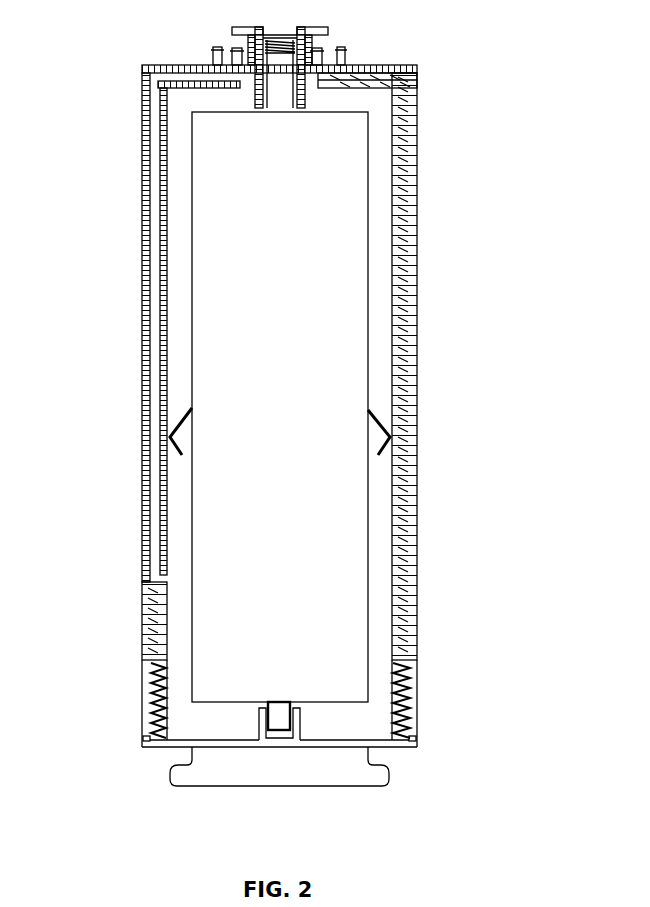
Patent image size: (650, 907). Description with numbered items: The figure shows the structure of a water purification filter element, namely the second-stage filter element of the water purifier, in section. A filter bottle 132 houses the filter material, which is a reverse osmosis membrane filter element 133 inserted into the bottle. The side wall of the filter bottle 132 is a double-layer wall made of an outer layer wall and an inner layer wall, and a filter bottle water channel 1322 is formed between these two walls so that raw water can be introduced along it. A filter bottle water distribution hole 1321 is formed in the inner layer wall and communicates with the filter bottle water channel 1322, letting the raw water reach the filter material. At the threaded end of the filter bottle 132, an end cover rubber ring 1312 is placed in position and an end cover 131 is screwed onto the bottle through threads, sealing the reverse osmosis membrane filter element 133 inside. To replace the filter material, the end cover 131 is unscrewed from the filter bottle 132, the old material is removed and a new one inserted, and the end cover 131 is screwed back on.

The end cover 131 is at (364, 770).
The end cover rubber ring 1312 is at (410, 740).
The filter bottle 132 is at (416, 478).
The filter bottle water distribution hole 1321 is at (160, 583).
The filter bottle water channel 1322 is at (158, 364).
The reverse osmosis membrane filter element 133 is at (190, 252).